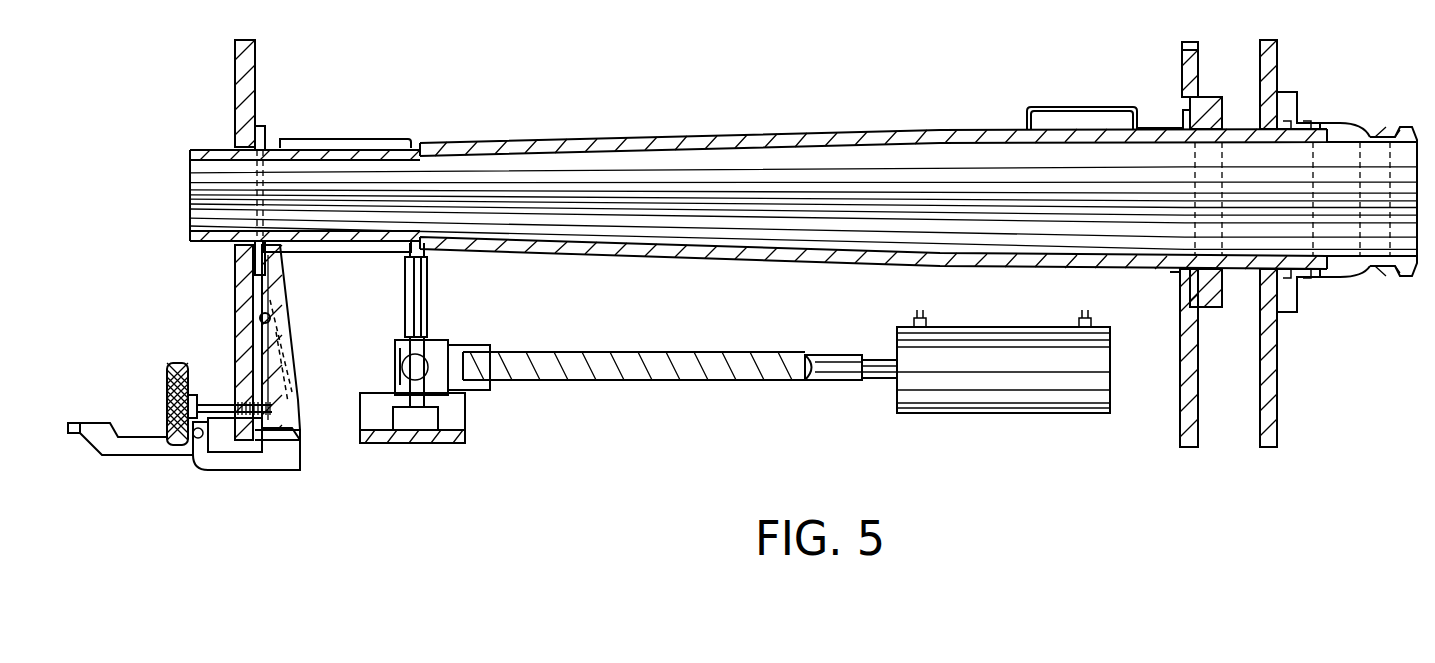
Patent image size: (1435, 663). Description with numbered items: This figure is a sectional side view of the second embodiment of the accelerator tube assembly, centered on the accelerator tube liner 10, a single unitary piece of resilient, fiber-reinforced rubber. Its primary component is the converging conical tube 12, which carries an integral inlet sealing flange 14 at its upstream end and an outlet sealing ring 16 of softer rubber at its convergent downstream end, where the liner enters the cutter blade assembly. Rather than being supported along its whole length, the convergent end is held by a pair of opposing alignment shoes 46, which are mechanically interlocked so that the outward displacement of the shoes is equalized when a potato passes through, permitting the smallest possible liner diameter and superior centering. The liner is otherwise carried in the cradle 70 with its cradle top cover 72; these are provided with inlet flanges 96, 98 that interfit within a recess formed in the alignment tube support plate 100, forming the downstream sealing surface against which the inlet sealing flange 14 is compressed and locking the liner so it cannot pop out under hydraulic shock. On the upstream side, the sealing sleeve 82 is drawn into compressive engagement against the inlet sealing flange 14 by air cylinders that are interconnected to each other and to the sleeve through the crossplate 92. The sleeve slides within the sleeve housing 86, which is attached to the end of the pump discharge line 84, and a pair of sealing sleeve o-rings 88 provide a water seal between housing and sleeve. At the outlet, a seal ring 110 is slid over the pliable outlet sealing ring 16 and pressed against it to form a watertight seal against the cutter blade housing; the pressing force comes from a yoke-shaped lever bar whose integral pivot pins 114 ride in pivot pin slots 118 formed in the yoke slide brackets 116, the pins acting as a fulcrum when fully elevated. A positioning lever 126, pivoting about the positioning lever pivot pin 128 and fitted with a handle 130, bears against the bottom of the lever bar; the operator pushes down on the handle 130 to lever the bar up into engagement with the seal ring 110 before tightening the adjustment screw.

The accelerator tube liner 10 is at (712, 116).
The converging conical tube 12 is at (933, 197).
The inlet sealing flange 14 is at (1198, 97).
The outlet sealing ring 16 is at (258, 125).
The alignment shoe 46 is at (383, 138).
The cradle 70 is at (820, 263).
The cradle top cover 72 is at (882, 131).
The sealing sleeve 82 is at (1337, 262).
The pump discharge line 84 is at (1385, 137).
The sleeve housing 86 is at (1340, 123).
The sealing sleeve o-ring 88 is at (1296, 296).
The crossplate 92 is at (1213, 300).
The inlet flange 96 is at (1183, 116).
The inlet flange 98 is at (1175, 285).
The alignment tube support plate 100 is at (1190, 448).
The seal ring 110 is at (266, 125).
The pivot pin 114 is at (271, 320).
The yoke slide bracket 116 is at (286, 389).
The pivot pin slot 118 is at (285, 364).
The positioning lever 126 is at (232, 471).
The positioning lever pivot pin 128 is at (196, 441).
The handle 130 is at (90, 423).